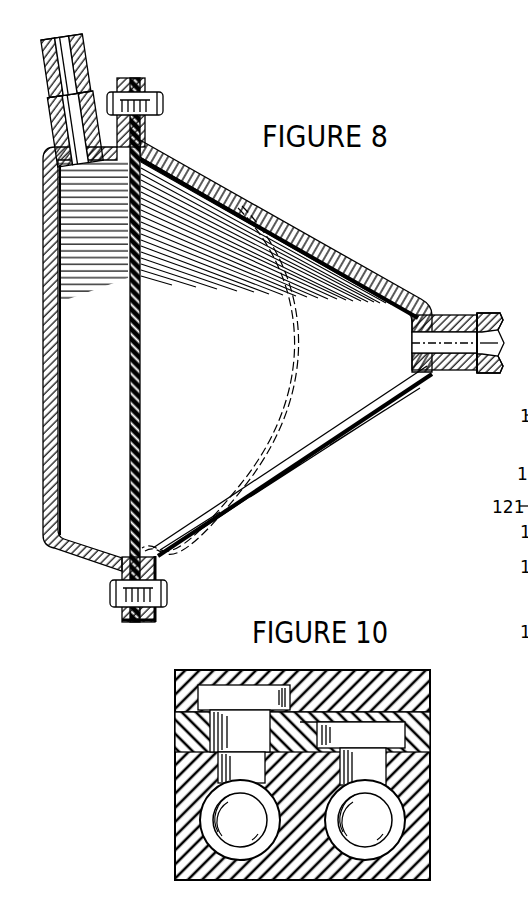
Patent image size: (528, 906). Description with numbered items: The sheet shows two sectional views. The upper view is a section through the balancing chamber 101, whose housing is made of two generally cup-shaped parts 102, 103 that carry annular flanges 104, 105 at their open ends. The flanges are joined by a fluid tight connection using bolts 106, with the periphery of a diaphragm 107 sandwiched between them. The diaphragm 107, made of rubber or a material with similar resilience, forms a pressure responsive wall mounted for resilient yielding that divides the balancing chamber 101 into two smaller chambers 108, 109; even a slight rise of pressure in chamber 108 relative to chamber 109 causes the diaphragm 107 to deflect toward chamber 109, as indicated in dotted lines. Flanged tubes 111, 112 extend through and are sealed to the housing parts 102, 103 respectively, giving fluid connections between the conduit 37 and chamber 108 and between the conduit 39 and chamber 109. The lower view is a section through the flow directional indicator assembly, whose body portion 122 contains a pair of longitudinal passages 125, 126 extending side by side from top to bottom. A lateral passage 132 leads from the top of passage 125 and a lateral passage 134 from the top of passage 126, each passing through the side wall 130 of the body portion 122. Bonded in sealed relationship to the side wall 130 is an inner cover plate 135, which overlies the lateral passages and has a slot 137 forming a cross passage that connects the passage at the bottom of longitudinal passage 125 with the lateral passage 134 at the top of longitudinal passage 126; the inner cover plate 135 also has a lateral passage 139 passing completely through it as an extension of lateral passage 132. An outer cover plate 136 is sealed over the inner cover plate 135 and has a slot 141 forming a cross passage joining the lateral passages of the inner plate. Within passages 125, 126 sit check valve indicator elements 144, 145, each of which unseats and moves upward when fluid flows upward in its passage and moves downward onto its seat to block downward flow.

In FIG. 8, the conduit 37 is at (80, 44).
In FIG. 8, the balancing chamber 101 is at (333, 242).
In FIG. 8, the housing part 102 is at (88, 556).
In FIG. 8, the housing part 103 is at (280, 474).
In FIG. 8, the annular flange 104 is at (124, 78).
In FIG. 8, the annular flange 105 is at (145, 86).
In FIG. 8, the bolts 106 is at (160, 121).
In FIG. 8, the diaphragm 107 is at (141, 335).
In FIG. 8, the chamber 108 is at (113, 343).
In FIG. 8, the chamber 109 is at (373, 361).
In FIG. 8, the flanged tube 111 is at (58, 148).
In FIG. 8, the flanged tube 112 is at (437, 313).
In FIG. 8, the conduit 39 is at (488, 316).
In FIG. 10, the body portion 122 is at (400, 876).
In FIG. 10, the longitudinal passage 125 is at (215, 838).
In FIG. 10, the longitudinal passage 126 is at (395, 805).
In FIG. 10, the side wall 130 is at (400, 738).
In FIG. 10, the lateral passage 132 is at (235, 770).
In FIG. 10, the lateral passage 134 is at (378, 770).
In FIG. 10, the inner cover plate 135 is at (430, 707).
In FIG. 10, the outer cover plate 136 is at (393, 690).
In FIG. 10, the slot 137 is at (430, 724).
In FIG. 10, the lateral passage 139 is at (225, 735).
In FIG. 10, the slot 141 is at (215, 702).
In FIG. 10, the check valve indicator element 144 is at (225, 815).
In FIG. 10, the check valve indicator element 145 is at (375, 838).